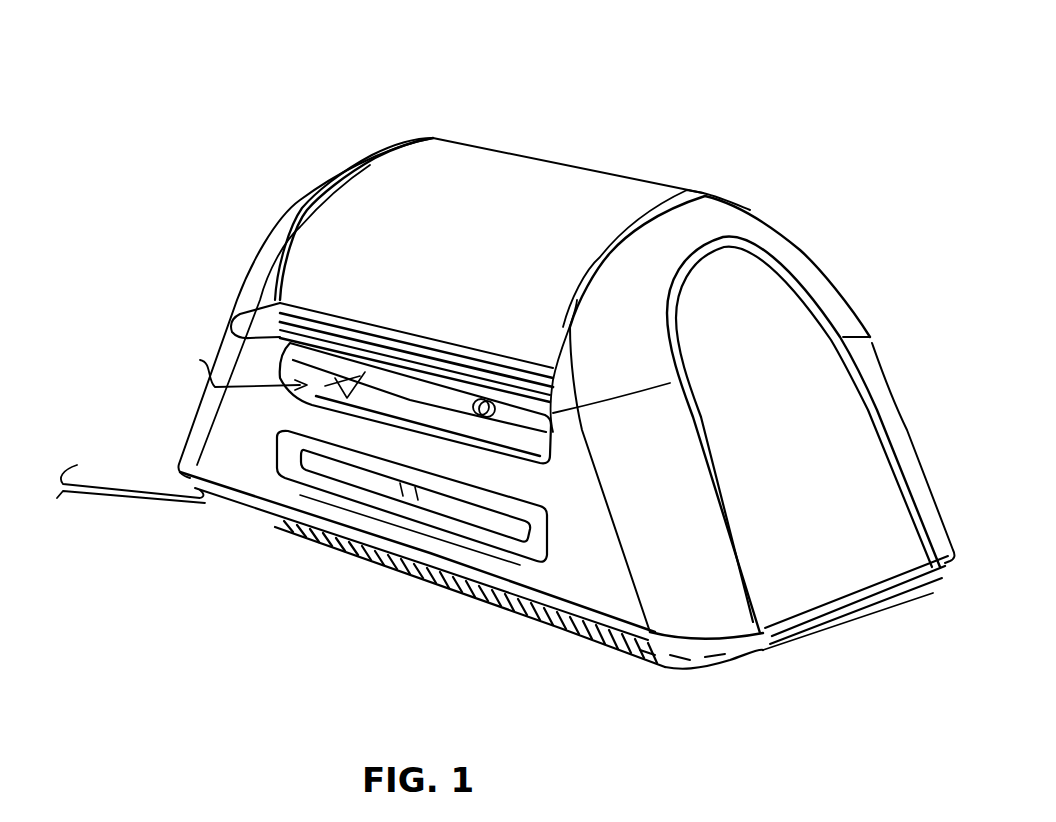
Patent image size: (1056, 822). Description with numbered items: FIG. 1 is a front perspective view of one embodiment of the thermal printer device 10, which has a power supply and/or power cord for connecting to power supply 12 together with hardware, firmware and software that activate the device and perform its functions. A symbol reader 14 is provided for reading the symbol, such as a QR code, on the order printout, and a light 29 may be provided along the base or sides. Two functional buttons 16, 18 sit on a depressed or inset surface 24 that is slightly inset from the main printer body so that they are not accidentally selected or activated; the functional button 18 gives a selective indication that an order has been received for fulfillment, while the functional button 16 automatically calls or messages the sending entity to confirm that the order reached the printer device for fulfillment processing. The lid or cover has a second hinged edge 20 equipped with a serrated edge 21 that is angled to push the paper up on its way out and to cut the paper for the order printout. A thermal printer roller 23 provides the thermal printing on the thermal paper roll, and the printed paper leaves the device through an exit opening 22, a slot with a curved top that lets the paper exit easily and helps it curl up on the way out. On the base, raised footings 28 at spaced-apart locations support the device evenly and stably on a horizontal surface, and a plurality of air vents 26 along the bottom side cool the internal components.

The thermal printer device 10 is at (713, 72).
The power cord for connecting to power supply 12 is at (100, 507).
The symbol reader 14 is at (813, 420).
The functional button 16 is at (355, 478).
The functional button 18 is at (480, 513).
The second hinged edge 20 is at (275, 298).
The serrated edge 21 is at (260, 345).
The exit opening 22 is at (200, 360).
The thermal printer roller 23 is at (365, 375).
The inset surface 24 is at (530, 548).
The air vents 26 is at (610, 653).
The raised footings 28 is at (670, 675).
The light 29 is at (948, 555).